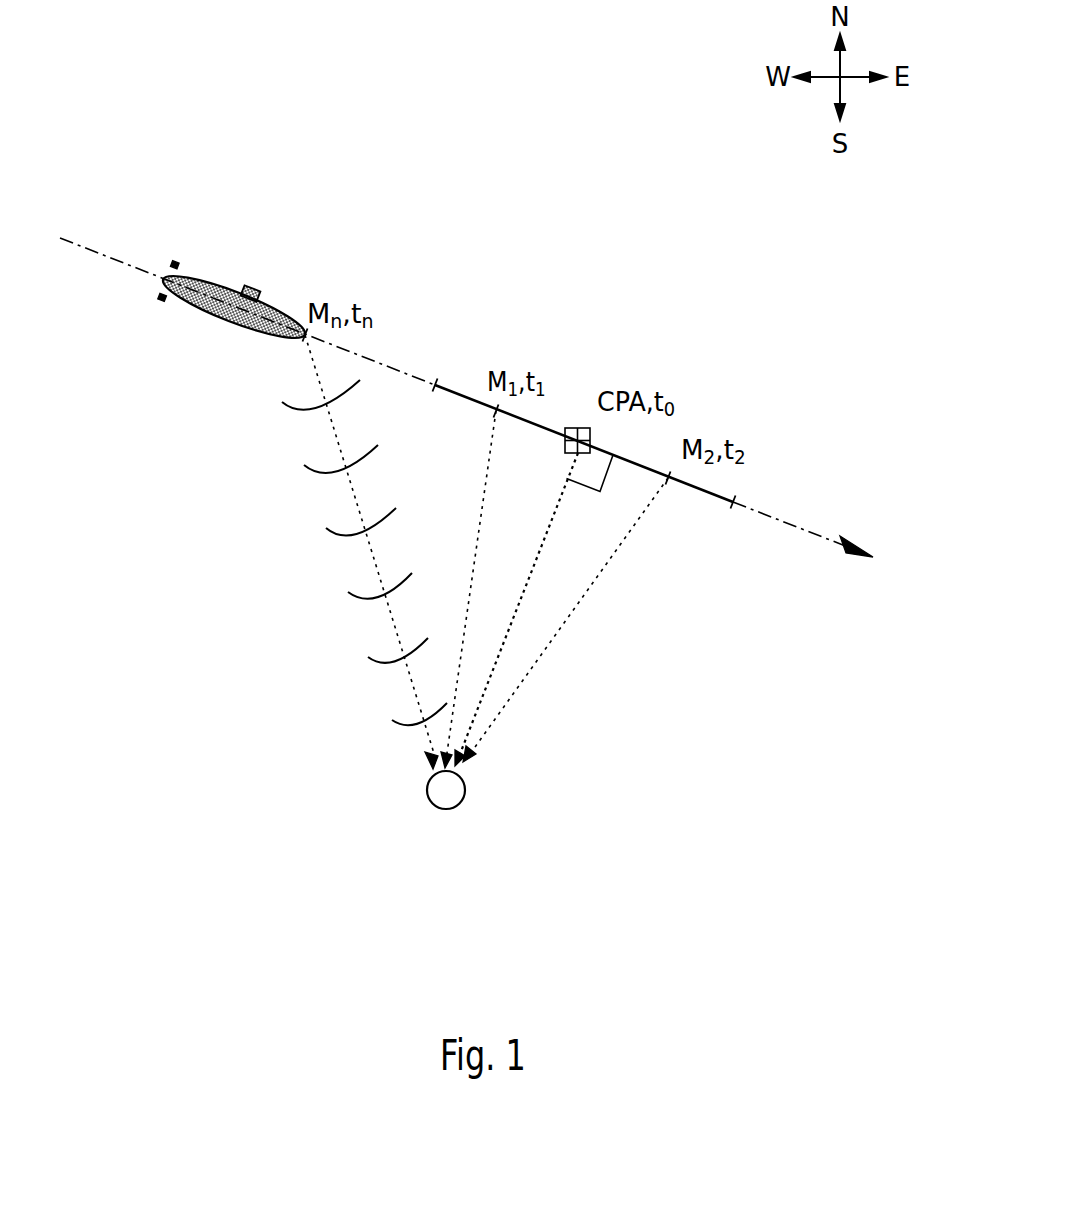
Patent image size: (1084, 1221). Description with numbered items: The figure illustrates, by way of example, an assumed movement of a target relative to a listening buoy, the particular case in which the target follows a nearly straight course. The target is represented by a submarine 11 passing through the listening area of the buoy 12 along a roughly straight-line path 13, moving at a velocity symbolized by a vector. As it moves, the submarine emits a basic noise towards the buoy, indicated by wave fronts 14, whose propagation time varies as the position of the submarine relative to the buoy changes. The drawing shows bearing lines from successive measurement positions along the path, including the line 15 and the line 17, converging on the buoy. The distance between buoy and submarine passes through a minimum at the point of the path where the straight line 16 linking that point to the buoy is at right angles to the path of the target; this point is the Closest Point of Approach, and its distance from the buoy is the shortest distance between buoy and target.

The submarine 11 is at (210, 283).
The buoy 12 is at (428, 803).
The straight-line path 13 is at (770, 518).
The sound waves emitted by target 14 is at (370, 553).
The bearing line from measuring position M1 15 is at (490, 457).
The straight line 16 is at (515, 603).
The bearing line from measuring position M2 17 is at (513, 693).